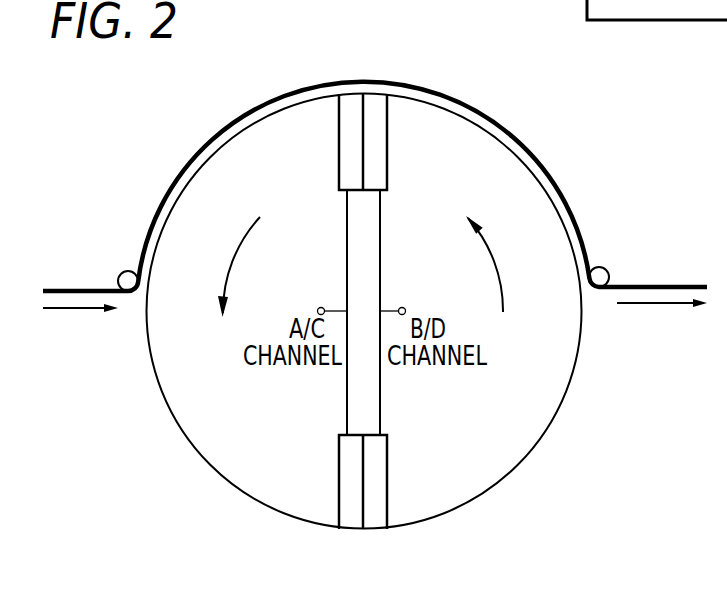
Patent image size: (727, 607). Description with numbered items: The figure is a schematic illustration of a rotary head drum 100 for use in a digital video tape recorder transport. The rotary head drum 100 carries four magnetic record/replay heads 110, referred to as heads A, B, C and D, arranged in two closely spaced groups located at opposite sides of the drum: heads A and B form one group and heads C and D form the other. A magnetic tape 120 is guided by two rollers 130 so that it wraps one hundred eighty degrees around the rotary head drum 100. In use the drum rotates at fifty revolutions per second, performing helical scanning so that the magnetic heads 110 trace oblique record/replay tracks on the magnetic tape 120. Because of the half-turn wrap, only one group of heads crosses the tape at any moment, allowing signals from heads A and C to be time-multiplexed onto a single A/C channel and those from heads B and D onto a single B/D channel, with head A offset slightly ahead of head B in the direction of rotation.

The rotary head drum 100 is at (528, 455).
The magnetic record/replay heads 110 is at (339, 190).
The magnetic tape 120 is at (560, 190).
The rollers 130 is at (124, 274).